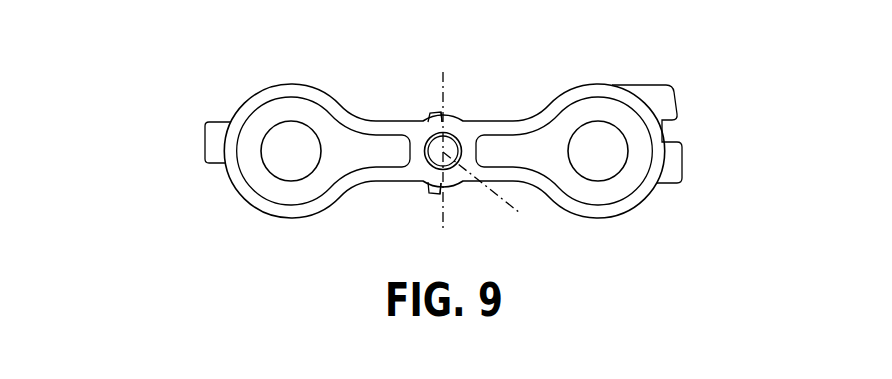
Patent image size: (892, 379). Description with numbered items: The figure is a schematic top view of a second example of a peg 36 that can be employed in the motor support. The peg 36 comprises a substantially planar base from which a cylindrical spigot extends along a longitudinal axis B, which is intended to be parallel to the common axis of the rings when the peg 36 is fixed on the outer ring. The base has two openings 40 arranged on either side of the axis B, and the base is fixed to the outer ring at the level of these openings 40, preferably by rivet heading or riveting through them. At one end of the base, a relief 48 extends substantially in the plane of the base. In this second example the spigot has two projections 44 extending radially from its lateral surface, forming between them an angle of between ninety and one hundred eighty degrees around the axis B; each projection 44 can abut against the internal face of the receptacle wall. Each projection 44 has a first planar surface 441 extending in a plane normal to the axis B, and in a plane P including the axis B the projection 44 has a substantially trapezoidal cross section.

The peg 36 is at (653, 212).
The openings 40 is at (285, 147).
The projection 44 is at (432, 115).
The planar surface 441 is at (450, 110).
The relief 48 is at (215, 140).
The plane P is at (447, 207).
The longitudinal axis B is at (492, 194).